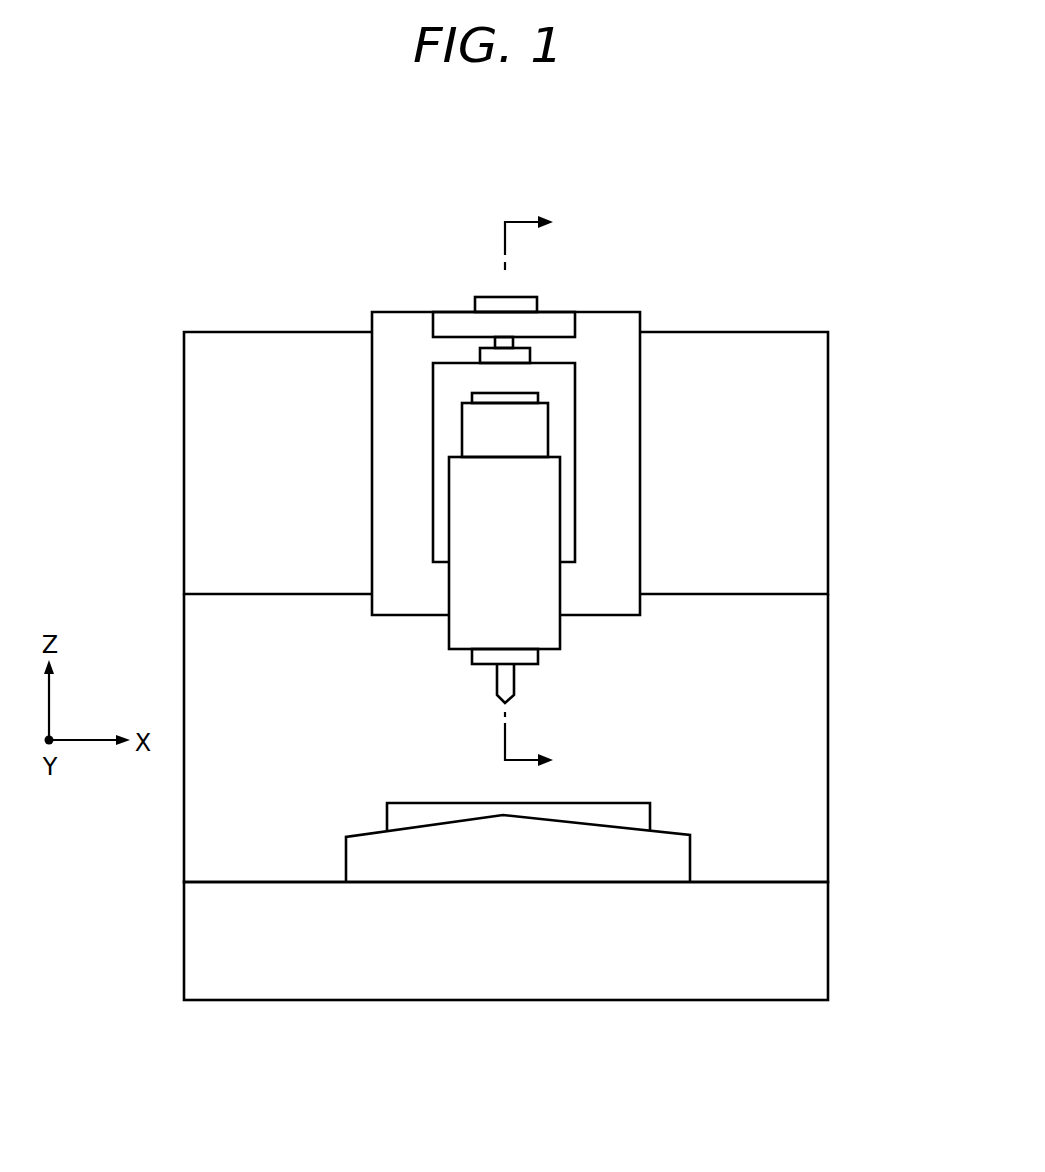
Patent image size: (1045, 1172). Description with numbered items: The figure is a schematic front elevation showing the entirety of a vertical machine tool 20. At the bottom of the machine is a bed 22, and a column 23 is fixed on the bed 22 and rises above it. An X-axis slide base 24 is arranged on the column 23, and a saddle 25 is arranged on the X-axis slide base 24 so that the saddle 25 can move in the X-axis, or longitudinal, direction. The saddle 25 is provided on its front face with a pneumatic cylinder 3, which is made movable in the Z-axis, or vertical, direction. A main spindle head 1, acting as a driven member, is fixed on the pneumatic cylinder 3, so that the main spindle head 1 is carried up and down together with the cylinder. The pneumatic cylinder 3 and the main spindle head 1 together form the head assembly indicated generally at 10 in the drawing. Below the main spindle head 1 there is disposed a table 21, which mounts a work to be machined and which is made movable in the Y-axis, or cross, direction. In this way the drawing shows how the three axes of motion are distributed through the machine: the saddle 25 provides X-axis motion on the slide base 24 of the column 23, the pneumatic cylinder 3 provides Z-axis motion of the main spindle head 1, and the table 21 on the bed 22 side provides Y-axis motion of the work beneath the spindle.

The main spindle head 1 is at (473, 505).
The pneumatic cylinder 3 is at (447, 384).
The machining head unit 10 is at (426, 347).
The vertical machine tool 20 is at (733, 252).
The table 21 is at (675, 848).
The bed 22 is at (802, 932).
The column 23 is at (802, 647).
The X-axis slide base 24 is at (802, 410).
The saddle 25 is at (615, 383).